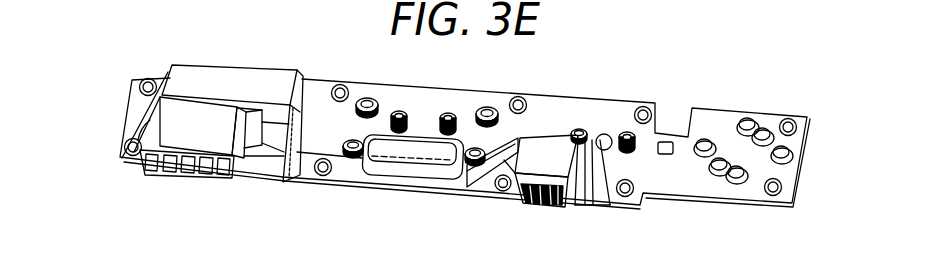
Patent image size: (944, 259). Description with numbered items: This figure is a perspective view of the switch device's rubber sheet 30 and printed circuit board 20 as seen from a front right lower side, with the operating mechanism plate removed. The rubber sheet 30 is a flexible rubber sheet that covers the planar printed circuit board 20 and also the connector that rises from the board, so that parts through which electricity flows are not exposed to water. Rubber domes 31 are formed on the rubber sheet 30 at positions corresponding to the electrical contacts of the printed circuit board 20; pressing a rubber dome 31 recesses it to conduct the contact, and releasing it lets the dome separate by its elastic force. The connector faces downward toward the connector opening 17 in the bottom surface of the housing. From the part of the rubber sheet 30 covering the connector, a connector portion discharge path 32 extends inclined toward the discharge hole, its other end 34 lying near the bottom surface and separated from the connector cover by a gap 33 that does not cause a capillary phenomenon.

The connector opening 17 is at (183, 180).
The printed circuit board 20 is at (345, 189).
The rubber sheet 30 is at (710, 120).
The rubber dome 31 is at (327, 172).
The connector portion discharge path 32 is at (519, 102).
The gap 33 is at (488, 188).
The other end 34 is at (463, 189).